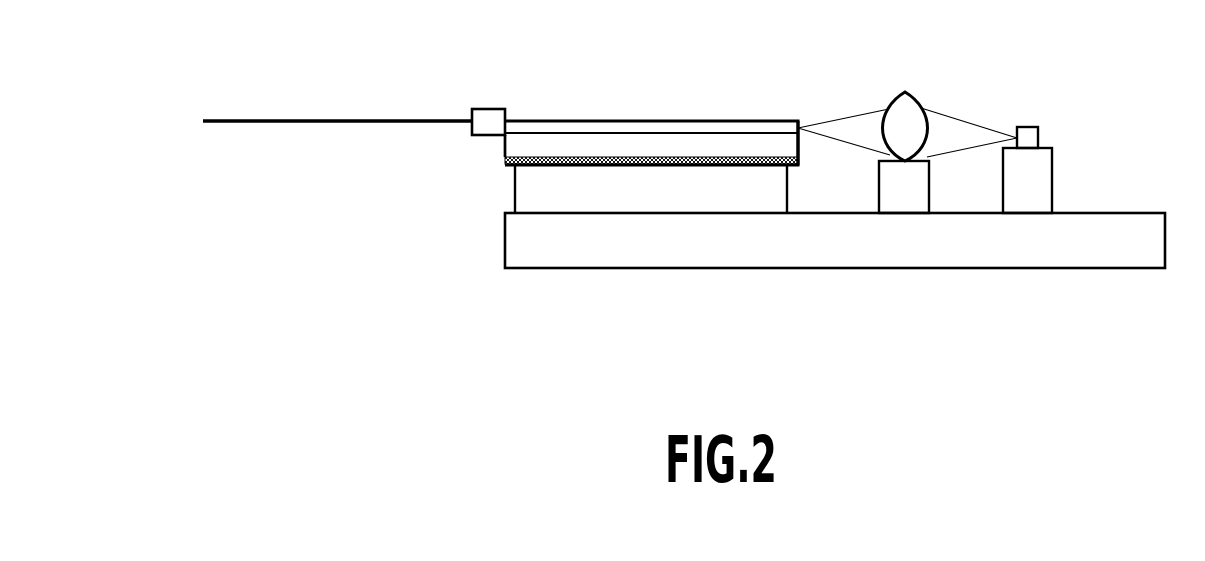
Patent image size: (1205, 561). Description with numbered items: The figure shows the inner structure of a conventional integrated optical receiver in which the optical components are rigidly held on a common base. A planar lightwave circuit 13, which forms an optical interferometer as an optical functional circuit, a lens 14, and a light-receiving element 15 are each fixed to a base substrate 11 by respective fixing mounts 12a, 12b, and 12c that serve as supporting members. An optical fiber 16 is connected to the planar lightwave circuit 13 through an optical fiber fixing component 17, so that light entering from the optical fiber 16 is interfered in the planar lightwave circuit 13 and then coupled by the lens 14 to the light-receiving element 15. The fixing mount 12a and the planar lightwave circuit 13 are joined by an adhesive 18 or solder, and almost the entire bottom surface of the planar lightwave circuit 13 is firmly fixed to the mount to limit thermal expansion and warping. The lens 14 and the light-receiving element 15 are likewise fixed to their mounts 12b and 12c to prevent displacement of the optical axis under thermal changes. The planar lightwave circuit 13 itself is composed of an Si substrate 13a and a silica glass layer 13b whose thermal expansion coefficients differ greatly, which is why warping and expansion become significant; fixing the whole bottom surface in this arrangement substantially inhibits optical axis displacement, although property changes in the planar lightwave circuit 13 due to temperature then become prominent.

The base substrate 11 is at (1131, 212).
The fixing mount 12a is at (518, 198).
The fixing mount 12b is at (903, 193).
The fixing mount 12c is at (1037, 193).
The planar lightwave circuit 13 is at (668, 175).
The Si substrate 13a is at (505, 148).
The silica glass layer 13b is at (783, 120).
The lens 14 is at (916, 97).
The light-receiving element 15 is at (1031, 125).
The optical fiber 16 is at (347, 120).
The optical fiber fixing component 17 is at (499, 108).
The adhesive 18 is at (507, 160).